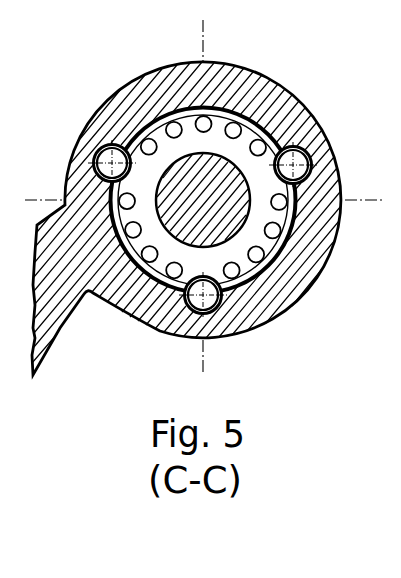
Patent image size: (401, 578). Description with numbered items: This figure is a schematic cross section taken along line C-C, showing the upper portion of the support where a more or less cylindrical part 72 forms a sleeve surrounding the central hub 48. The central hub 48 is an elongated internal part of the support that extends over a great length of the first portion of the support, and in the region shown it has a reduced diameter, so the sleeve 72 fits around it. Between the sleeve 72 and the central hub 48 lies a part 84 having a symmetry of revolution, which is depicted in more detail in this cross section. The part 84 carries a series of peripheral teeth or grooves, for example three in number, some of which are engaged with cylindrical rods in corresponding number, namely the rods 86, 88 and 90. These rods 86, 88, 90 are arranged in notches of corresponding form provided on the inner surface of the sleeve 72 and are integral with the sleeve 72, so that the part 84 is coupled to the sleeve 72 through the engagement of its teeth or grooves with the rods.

The cylindrical part forming a sleeve 72 is at (117, 93).
The elongated internal part forming a central hub 48 is at (215, 167).
The part having a symmetry of revolution 84 is at (255, 230).
The cylindrical rod 86 is at (296, 146).
The cylindrical rod 88 is at (228, 333).
The cylindrical rod 90 is at (80, 133).